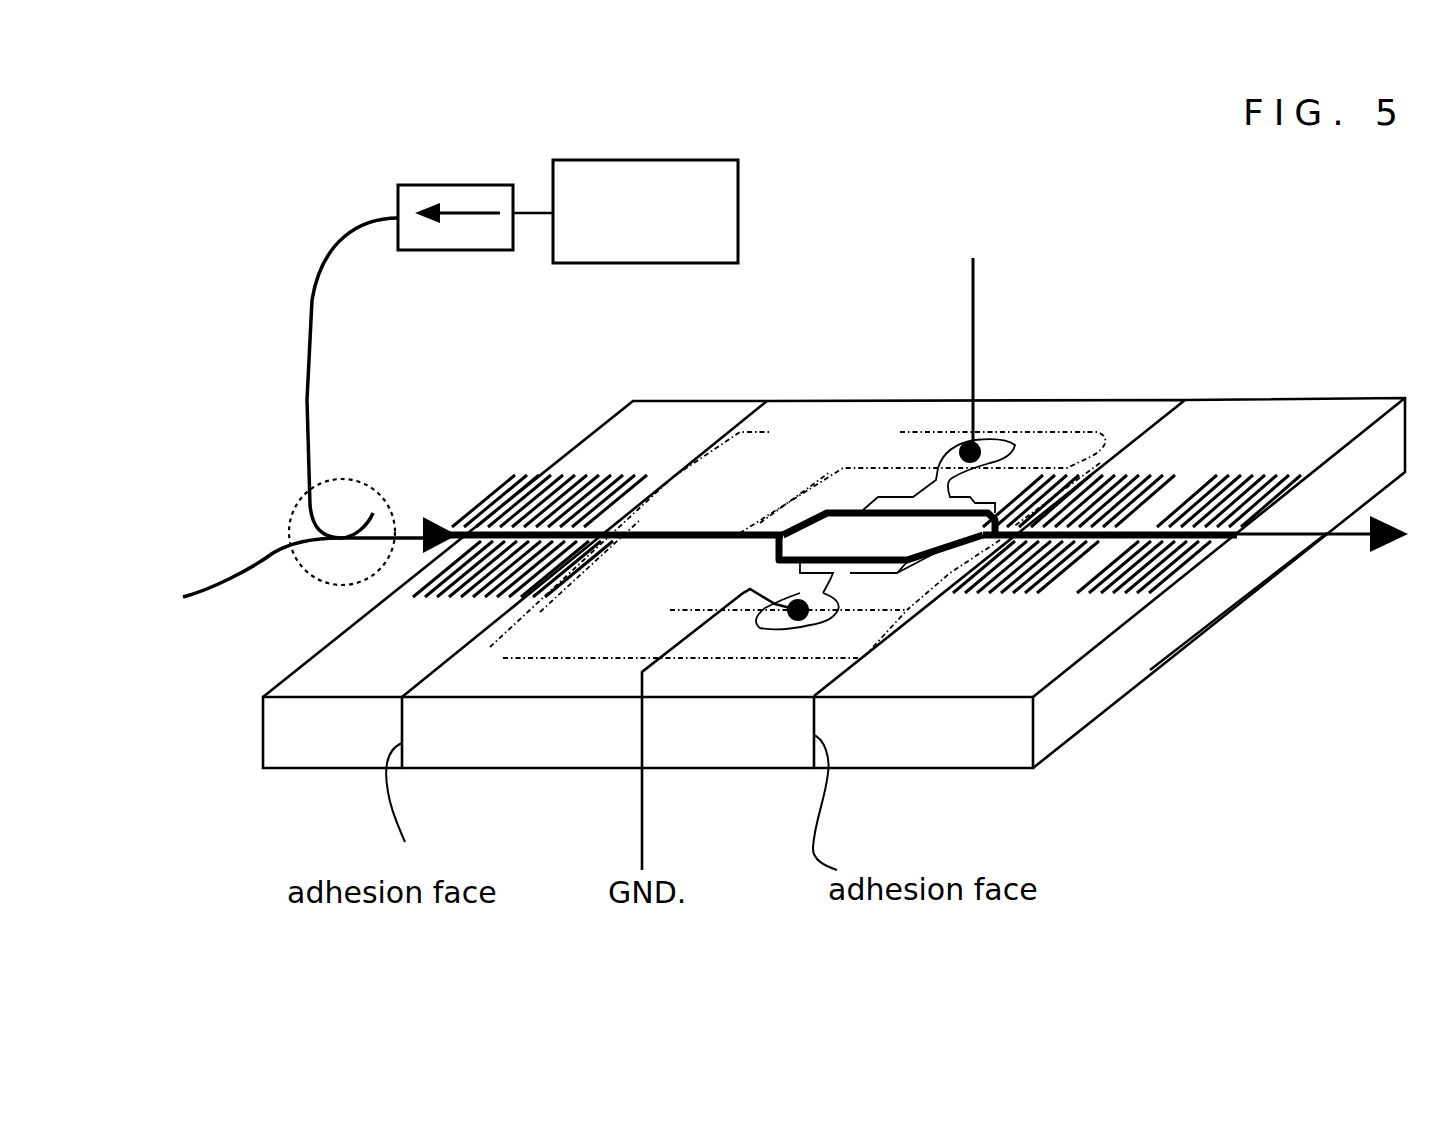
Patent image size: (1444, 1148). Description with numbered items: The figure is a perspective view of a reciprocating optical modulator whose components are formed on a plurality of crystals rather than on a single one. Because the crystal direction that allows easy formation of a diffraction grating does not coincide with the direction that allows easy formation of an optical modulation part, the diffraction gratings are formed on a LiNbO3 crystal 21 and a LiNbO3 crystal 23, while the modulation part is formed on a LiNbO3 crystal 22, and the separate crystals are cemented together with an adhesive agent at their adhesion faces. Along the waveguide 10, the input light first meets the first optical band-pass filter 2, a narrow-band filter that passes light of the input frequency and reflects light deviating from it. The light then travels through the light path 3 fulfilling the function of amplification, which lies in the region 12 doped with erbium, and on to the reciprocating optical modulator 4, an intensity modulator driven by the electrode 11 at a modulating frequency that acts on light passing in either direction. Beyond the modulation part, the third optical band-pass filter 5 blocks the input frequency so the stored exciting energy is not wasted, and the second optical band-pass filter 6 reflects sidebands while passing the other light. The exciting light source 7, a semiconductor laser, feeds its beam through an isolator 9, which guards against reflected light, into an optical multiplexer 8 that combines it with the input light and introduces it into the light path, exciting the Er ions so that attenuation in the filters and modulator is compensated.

The first optical band-pass filter 2 is at (587, 467).
The light path fulfilling the function of amplification 3 is at (503, 658).
The reciprocating optical modulator 4 is at (670, 610).
The third optical band-pass filter 5 is at (1117, 477).
The second optical band-pass filter 6 is at (1243, 473).
The exciting light source 7 is at (733, 178).
The optical multiplexer 8 is at (347, 481).
The isolator 9 is at (423, 185).
The Ti:LiNbO3 wave guide 10 is at (667, 532).
The signal electrode 11 is at (1007, 443).
The region doped with erbium 12 is at (605, 660).
The LiNbO3 crystal 21 is at (333, 767).
The LiNbO3 crystal 22 is at (773, 762).
The LiNbO3 crystal 23 is at (938, 758).